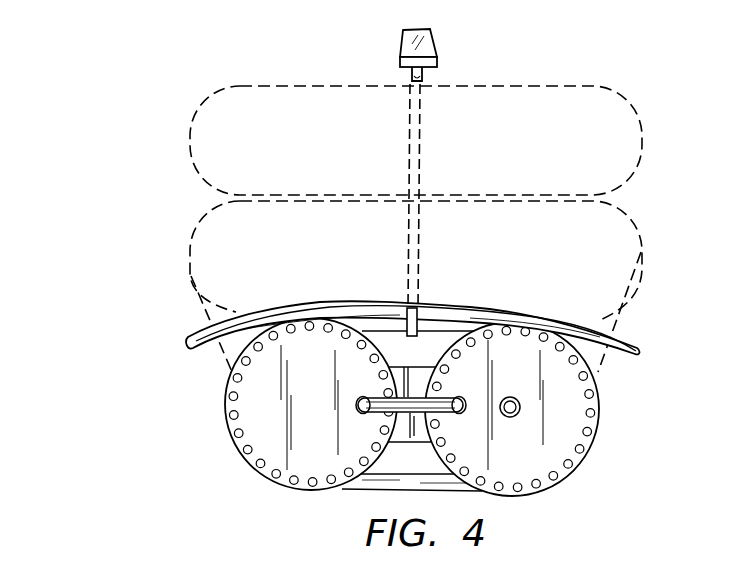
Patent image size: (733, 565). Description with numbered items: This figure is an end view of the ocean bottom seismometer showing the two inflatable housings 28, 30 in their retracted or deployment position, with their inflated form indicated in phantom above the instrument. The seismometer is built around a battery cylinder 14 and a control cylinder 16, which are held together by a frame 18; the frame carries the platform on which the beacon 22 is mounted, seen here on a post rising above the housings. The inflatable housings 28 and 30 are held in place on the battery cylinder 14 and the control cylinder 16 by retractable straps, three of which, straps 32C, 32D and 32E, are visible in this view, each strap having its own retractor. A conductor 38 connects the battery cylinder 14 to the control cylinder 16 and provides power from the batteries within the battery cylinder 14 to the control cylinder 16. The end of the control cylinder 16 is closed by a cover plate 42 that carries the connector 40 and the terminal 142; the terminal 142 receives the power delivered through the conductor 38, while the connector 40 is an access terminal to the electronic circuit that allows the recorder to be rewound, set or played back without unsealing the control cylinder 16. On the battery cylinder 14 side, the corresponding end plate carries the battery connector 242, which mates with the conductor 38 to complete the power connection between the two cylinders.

The battery cylinder 14 is at (262, 421).
The control cylinder 16 is at (566, 426).
The frame 18 is at (392, 333).
The beacon 22 is at (432, 46).
The inflatable housing 28 is at (628, 358).
The inflatable housing 30 is at (624, 121).
The retractable strap 32C is at (643, 215).
The retractable strap 32D is at (418, 320).
The retractable strap 32E is at (190, 199).
The conductor 38 is at (372, 399).
The connector 40 is at (510, 418).
The cover plate 42 is at (560, 482).
The terminal 142 is at (462, 416).
The battery connector 242 is at (357, 414).